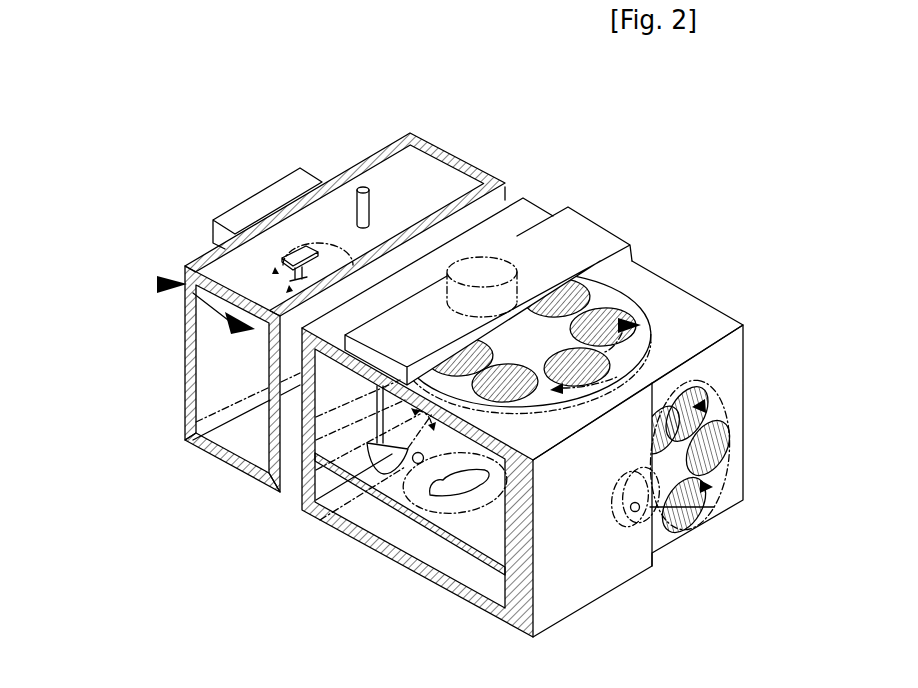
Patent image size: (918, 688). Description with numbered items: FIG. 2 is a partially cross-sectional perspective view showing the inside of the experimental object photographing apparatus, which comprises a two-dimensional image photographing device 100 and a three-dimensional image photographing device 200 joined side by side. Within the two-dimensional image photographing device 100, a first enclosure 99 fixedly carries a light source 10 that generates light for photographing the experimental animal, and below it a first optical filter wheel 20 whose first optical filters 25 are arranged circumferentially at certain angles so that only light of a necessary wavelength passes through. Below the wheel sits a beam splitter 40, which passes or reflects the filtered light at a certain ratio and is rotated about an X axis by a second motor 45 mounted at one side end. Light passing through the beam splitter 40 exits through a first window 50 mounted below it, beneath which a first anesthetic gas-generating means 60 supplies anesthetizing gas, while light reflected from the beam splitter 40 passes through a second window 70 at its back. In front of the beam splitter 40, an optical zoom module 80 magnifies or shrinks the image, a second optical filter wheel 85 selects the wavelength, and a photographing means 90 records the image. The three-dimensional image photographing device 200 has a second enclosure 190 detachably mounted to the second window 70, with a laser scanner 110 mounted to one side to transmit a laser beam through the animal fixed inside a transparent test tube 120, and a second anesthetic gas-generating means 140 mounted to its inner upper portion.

The light source 10 is at (483, 270).
The first optical filter wheel 20 is at (566, 337).
The first optical filters 25 is at (662, 283).
The beam splitter 40 is at (305, 482).
The second motor 45 is at (271, 489).
The first window 50 is at (450, 545).
The first anesthetic gas-generating means 60 is at (376, 476).
The second window 70 is at (283, 428).
The optical zoom module 80 is at (742, 434).
The second optical filter wheel 85 is at (722, 386).
The photographing means 90 is at (743, 500).
The first enclosure 99 is at (560, 567).
The two-dimensional image photographing device 100 is at (512, 393).
The laser scanner 110 is at (258, 196).
The test tube 120 is at (330, 247).
The second anesthetic gas-generating means 140 is at (367, 196).
The second enclosure 190 is at (187, 261).
The three-dimensional image photographing device 200 is at (326, 308).